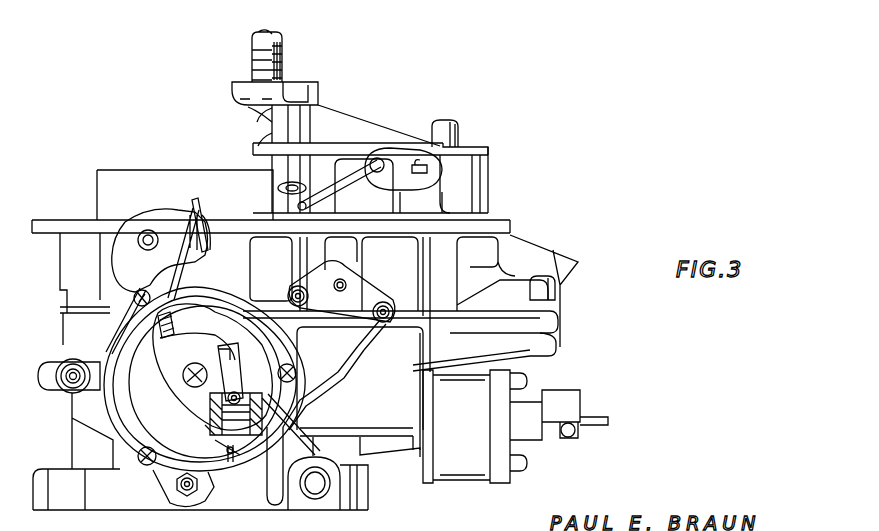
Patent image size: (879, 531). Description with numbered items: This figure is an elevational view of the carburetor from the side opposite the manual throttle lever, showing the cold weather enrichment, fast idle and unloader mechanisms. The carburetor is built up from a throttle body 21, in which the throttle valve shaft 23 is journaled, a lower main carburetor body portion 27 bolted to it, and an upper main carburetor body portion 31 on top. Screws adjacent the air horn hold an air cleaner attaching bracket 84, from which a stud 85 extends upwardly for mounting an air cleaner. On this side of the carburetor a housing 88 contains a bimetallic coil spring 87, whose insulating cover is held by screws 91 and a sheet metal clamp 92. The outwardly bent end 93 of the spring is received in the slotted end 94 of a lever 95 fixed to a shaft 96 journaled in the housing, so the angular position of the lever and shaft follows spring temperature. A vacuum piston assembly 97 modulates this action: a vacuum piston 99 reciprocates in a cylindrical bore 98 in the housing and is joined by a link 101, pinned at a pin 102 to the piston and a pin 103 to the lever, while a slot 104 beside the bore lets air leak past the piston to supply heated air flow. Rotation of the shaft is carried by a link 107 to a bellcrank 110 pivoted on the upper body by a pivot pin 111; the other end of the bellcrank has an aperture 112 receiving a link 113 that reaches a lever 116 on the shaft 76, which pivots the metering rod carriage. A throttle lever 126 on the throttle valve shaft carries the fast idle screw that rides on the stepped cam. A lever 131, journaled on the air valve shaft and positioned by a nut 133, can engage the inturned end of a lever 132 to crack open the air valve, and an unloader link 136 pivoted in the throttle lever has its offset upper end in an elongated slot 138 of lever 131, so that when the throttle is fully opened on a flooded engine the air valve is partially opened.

The throttle body 21 is at (355, 496).
The throttle valve shaft 23 is at (200, 488).
The lower main carburetor body portion 27 is at (428, 380).
The upper main carburetor body portion 31 is at (483, 160).
The shaft 76 is at (412, 172).
The air cleaner attaching bracket 84 is at (243, 95).
The stud 85 is at (272, 58).
The bimetallic coil spring 87 is at (234, 328).
The housing 88 is at (276, 430).
The screws 91 is at (135, 262).
The sheet metal clamp 92 is at (294, 350).
The outwardly bent end 93 is at (174, 325).
The slotted end 94 is at (158, 335).
The lever 95 is at (160, 349).
The shaft 96 is at (190, 365).
The vacuum piston assembly 97 is at (236, 462).
The cylindrical bore 98 is at (224, 414).
The vacuum piston 99 is at (207, 430).
The link 101 is at (240, 366).
The pin 102 is at (260, 380).
The pin 103 is at (213, 352).
The slot 104 is at (232, 444).
The link 107 is at (376, 350).
The bellcrank 110 is at (362, 290).
The pivot pin 111 is at (344, 280).
The aperture 112 is at (292, 288).
The link 113 is at (304, 209).
The lever 116 is at (426, 184).
The throttle lever 126 is at (160, 490).
The lever 131 is at (180, 268).
The lever 132 is at (147, 214).
The nut 133 is at (148, 228).
The link 136 is at (230, 222).
The elongated slot 138 is at (188, 204).